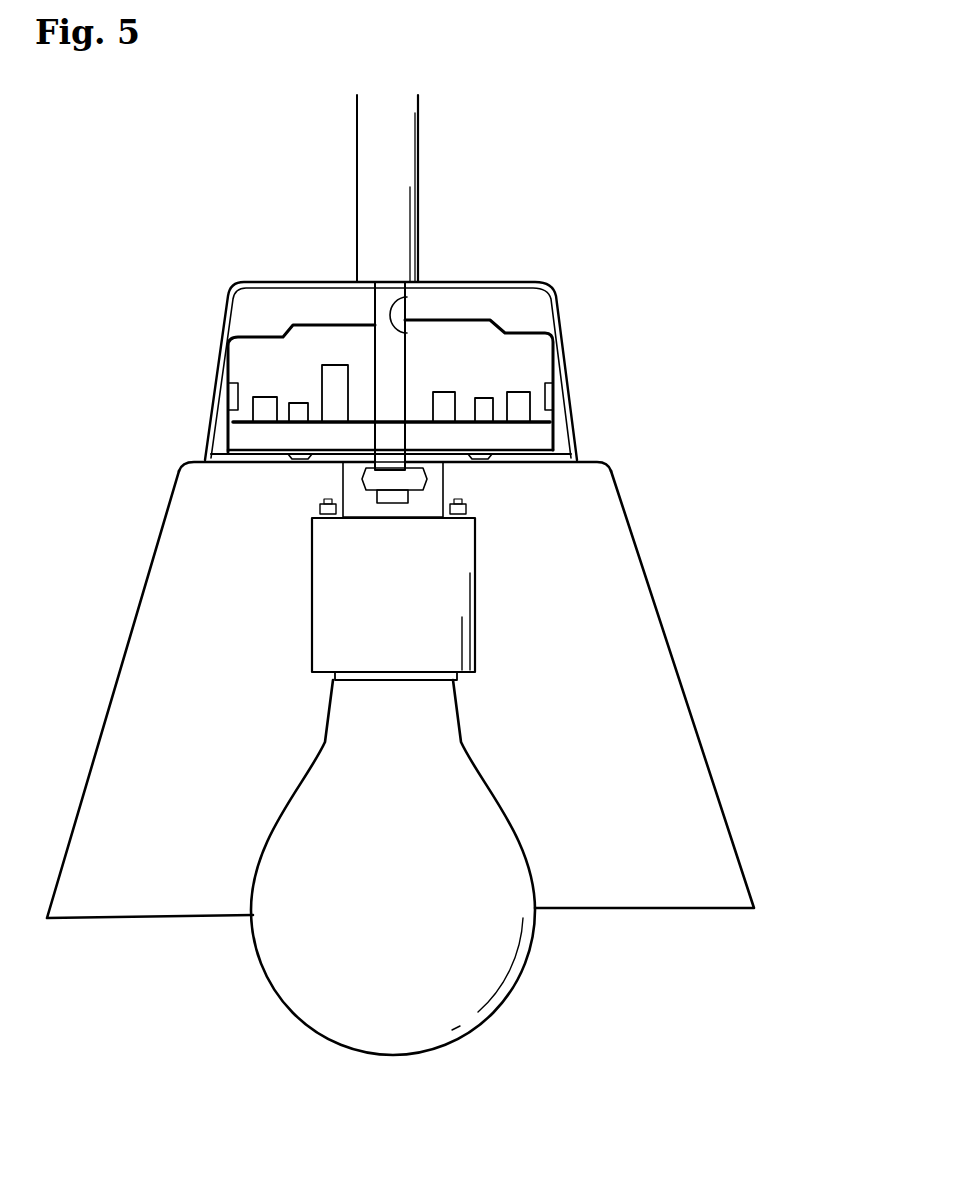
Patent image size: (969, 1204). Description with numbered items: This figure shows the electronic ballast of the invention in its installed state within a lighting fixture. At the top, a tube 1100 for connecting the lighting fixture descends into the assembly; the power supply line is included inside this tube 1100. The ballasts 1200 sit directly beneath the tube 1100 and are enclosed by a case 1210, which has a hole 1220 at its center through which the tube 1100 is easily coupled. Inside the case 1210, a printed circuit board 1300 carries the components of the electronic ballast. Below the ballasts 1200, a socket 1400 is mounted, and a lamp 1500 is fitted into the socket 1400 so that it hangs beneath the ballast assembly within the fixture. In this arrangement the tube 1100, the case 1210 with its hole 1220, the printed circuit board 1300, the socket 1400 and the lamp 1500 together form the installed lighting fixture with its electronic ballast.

The tube 1100 is at (420, 177).
The ballasts 1200 is at (557, 420).
The case 1210 is at (547, 330).
The hole 1220 is at (404, 301).
The printed circuit board 1300 is at (520, 391).
The socket 1400 is at (465, 630).
The lamp 1500 is at (507, 990).